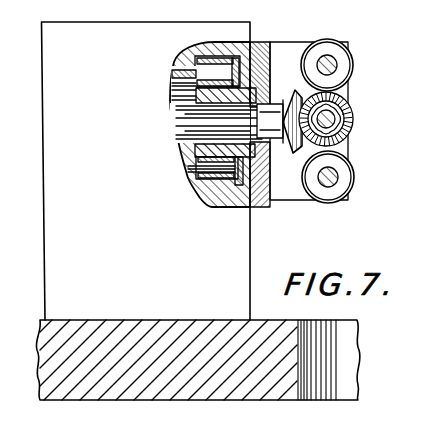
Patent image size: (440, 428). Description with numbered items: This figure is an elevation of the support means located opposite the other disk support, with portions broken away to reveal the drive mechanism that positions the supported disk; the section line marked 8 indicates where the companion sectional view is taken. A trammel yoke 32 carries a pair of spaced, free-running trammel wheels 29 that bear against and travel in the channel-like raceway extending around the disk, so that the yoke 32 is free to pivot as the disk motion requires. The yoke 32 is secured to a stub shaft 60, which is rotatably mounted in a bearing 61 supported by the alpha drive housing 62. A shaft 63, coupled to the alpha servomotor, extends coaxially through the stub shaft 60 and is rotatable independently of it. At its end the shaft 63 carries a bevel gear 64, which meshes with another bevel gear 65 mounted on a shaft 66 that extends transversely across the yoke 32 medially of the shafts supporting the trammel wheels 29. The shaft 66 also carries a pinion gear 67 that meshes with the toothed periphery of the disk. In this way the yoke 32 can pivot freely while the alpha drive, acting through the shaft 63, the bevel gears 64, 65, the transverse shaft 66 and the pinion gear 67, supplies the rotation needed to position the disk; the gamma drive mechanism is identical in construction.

The section line 8- 8 is at (162, 80).
The trammel wheels 29 is at (333, 47).
The trammel yoke 32 is at (283, 47).
The stub shaft 60 is at (196, 151).
The bearing 61 is at (200, 169).
The alpha drive housing 62 is at (252, 231).
The shaft 63 is at (184, 121).
The bevel gear 64 is at (292, 150).
The bevel gear 65 is at (341, 119).
The shaft 66 is at (345, 104).
The pinion gear 67 is at (339, 127).